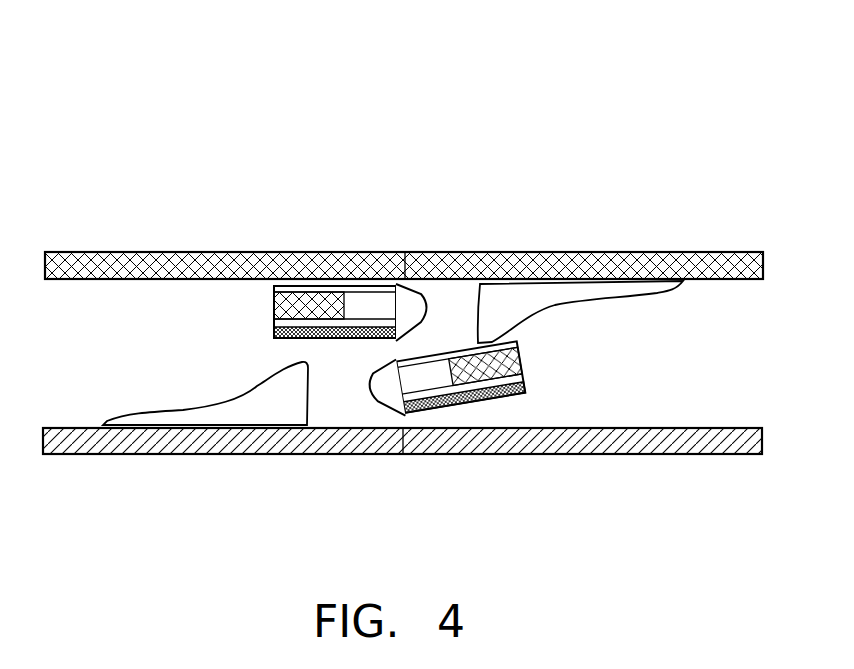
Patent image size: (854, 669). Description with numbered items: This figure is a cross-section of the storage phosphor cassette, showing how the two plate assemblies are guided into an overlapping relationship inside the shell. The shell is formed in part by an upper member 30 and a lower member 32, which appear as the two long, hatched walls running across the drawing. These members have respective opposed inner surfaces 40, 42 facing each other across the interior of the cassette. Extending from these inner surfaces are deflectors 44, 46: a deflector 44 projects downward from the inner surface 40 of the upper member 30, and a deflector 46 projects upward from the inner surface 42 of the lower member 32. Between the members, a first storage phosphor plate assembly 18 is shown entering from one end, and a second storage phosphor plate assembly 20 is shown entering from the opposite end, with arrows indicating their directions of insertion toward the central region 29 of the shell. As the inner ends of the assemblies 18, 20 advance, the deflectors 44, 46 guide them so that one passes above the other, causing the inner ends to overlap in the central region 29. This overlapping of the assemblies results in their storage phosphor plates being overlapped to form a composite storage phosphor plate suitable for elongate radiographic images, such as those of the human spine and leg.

The first storage phosphor plate assembly 18 is at (244, 309).
The second storage phosphor plate assembly 20 is at (550, 353).
The central region 29 is at (447, 232).
The upper member 30 is at (220, 251).
The lower member 32 is at (372, 455).
The inner surface 40 is at (90, 281).
The inner surface 42 is at (703, 428).
The deflector 44 is at (683, 283).
The deflector 46 is at (165, 408).